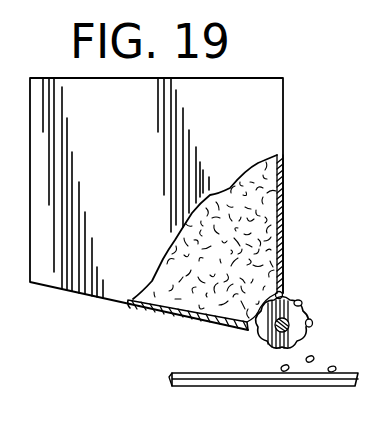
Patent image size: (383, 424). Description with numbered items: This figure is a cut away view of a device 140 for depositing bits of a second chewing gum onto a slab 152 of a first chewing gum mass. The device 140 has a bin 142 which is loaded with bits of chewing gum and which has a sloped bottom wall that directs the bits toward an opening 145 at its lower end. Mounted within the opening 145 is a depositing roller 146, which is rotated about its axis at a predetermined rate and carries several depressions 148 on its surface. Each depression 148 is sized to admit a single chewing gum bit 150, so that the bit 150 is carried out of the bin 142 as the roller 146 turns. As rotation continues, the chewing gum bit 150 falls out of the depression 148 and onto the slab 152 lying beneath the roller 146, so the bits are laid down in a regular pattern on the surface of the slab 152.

The device 140 is at (263, 73).
The bin 142 is at (263, 193).
The opening 145 is at (279, 290).
The depositing roller 146 is at (257, 333).
The depressions 148 is at (302, 350).
The chewing gum bit 150 is at (306, 302).
The slab 152 is at (192, 373).